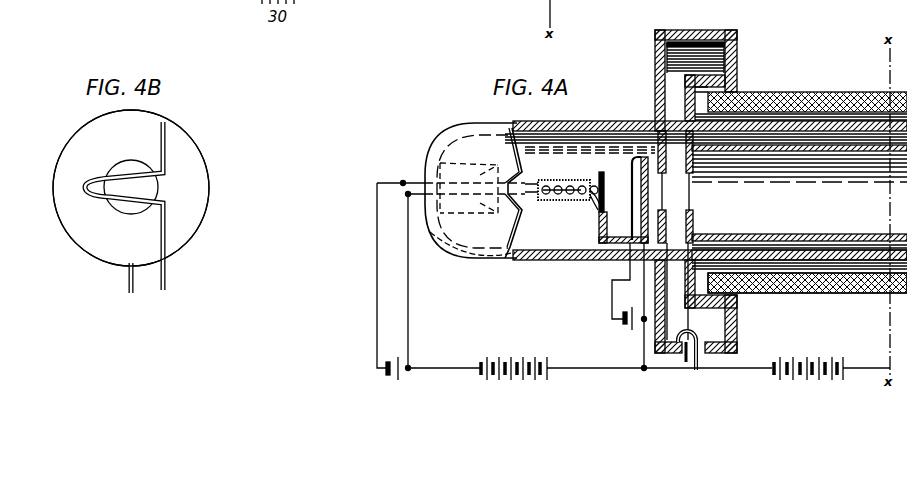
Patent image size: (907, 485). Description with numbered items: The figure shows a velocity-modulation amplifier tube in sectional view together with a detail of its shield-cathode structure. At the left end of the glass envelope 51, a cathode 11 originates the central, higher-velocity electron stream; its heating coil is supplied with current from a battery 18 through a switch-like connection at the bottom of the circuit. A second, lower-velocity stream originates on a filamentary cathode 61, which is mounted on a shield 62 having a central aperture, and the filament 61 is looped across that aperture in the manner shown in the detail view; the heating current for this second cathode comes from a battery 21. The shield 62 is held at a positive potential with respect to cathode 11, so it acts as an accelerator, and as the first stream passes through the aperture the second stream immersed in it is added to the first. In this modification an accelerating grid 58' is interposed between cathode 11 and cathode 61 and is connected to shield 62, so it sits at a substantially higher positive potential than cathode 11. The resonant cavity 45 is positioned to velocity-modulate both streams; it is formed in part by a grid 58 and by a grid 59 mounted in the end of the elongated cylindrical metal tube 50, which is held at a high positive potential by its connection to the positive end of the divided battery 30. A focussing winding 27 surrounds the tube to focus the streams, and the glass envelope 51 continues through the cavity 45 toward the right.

In FIG. 4A, the cathode 11 is at (593, 203).
In FIG. 4A, the battery 18 is at (390, 362).
In FIG. 4A, the battery 21 is at (623, 305).
In FIG. 4A, the focussing winding 27 is at (805, 102).
In FIG. 4A, the divided battery 30 is at (800, 363).
In FIG. 4A, the input resonant chamber 45 is at (717, 55).
In FIG. 4A, the elongated cylindrical metal tube 50 is at (873, 237).
In FIG. 4A, the glass envelope 51 is at (807, 257).
In FIG. 4A, the grid 58 is at (698, 235).
In FIG. 4A, the accelerating grid 58' is at (582, 231).
In FIG. 4A, the grid 59 is at (687, 197).
In FIG. 4B, the filamentary cathode 61 is at (90, 198).
In FIG. 4A, the filamentary cathode 61 is at (626, 183).
In FIG. 4B, the shield 62 is at (80, 141).
In FIG. 4A, the shield 62 is at (644, 156).